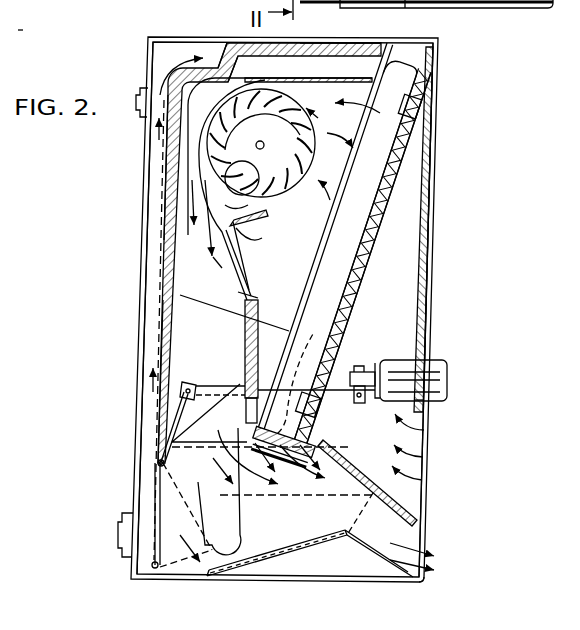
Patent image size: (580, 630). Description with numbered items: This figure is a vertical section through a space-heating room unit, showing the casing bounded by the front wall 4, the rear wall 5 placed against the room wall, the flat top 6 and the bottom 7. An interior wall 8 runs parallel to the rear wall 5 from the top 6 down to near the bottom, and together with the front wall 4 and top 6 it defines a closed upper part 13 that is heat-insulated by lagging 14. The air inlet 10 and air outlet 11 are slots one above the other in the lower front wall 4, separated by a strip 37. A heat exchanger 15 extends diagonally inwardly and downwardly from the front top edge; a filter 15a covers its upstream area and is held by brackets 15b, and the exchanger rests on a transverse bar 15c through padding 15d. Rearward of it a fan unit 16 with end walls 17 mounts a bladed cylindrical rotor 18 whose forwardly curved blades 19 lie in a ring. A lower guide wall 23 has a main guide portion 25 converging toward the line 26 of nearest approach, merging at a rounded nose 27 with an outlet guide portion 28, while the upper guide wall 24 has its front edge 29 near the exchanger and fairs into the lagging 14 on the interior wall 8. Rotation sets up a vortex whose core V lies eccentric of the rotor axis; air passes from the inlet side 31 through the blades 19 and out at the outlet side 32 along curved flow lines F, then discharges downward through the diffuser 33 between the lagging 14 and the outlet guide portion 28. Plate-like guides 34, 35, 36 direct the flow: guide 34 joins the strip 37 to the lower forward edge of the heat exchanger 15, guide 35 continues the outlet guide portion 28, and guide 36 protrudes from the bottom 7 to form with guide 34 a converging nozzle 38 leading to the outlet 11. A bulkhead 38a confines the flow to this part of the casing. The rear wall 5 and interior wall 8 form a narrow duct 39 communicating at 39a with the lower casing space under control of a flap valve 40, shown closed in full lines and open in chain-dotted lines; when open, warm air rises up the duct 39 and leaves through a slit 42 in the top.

The front wall 4 is at (432, 231).
The rear wall 5 is at (148, 190).
The top 6 is at (213, 46).
The bottom 7 is at (424, 583).
The interior wall 8 is at (163, 238).
The air inlet 10 is at (426, 439).
The air outlet 11 is at (441, 552).
The closed upper part of the casing 13 is at (200, 58).
The lagging 14 is at (170, 137).
The heat exchanger 15 is at (358, 236).
The filter 15a is at (366, 270).
The brackets 15b is at (418, 112).
The bar 15c is at (297, 461).
The padding 15d is at (304, 398).
The fan unit 16 is at (198, 165).
The end walls 17 is at (208, 305).
The bladed cylindrical rotor 18 is at (289, 190).
The blades 19 is at (261, 143).
The lower guide wall 23 is at (234, 237).
The upper guide wall 24 is at (306, 46).
The main guide portion 25 is at (236, 226).
The line of nearest approach 26 is at (267, 222).
The rounded nose 27 is at (213, 269).
The outlet guide portion 28 is at (238, 290).
The front edge 29 is at (348, 46).
The inlet side of the rotor 31 is at (340, 174).
The outlet side of the rotor 32 is at (205, 257).
The diffuser 33 is at (190, 290).
The flow guide 34 is at (338, 455).
The flow guide 35 is at (245, 362).
The flow guide 36 is at (326, 542).
The strip 37 is at (423, 502).
The nozzle 38 is at (356, 534).
The bulkhead 38a is at (409, 6).
The duct 39 is at (148, 347).
The communication opening 39a is at (147, 468).
The flap valve 40 is at (136, 510).
The slit 42 is at (212, 42).
The flow lines F is at (310, 154).
The vortex core V is at (228, 217).